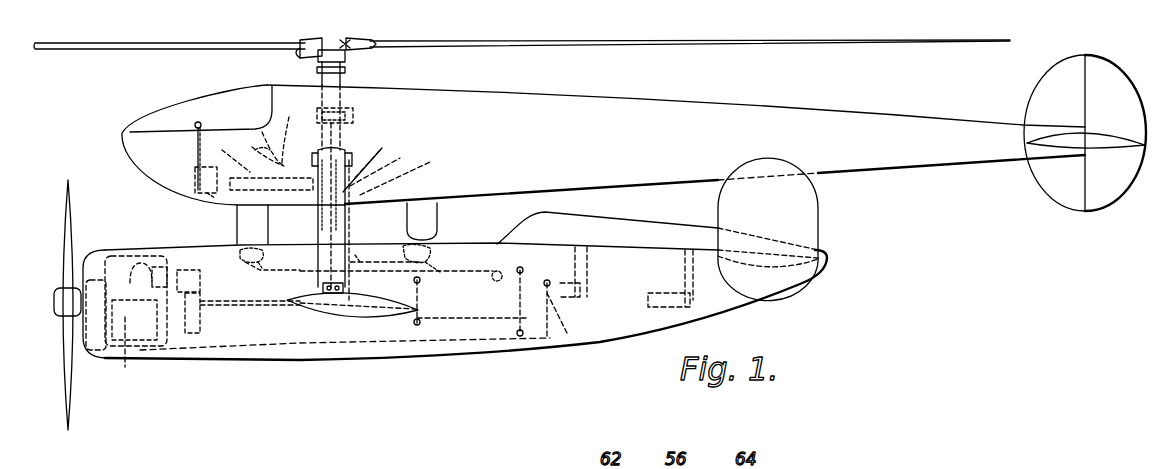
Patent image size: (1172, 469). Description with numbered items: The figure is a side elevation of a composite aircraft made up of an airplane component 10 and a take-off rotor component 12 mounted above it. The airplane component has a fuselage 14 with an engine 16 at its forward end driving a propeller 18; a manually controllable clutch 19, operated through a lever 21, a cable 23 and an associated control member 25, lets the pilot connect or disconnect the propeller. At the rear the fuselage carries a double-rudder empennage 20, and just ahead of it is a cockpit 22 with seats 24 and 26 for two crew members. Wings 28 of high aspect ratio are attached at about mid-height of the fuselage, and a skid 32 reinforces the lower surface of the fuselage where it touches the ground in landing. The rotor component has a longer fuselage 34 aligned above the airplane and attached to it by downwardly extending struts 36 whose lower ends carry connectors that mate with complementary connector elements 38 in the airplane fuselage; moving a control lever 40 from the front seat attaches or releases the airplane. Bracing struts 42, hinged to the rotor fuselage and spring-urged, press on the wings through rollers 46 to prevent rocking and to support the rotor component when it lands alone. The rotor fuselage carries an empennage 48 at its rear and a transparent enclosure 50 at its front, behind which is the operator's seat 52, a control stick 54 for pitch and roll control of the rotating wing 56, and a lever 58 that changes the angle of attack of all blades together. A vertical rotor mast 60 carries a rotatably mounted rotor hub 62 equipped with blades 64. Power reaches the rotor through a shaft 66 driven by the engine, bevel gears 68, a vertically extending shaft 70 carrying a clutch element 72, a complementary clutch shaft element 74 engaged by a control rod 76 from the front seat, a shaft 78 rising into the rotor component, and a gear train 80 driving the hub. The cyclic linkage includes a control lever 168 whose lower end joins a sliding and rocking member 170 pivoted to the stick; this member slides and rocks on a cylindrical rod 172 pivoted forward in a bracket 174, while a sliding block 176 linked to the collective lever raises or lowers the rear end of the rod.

The airplane component 10 is at (372, 371).
The take-off rotor component 12 is at (722, 88).
The fuselage 14 is at (463, 353).
The engine 16 is at (129, 368).
The propeller 18 is at (60, 347).
The clutch 19 is at (53, 297).
The empennage 20 is at (813, 236).
The lever 21 is at (90, 360).
The cockpit 22 is at (652, 232).
The cable 23 is at (485, 342).
The front seat 24 is at (580, 289).
The control rod 25 is at (567, 333).
The seat 26 is at (657, 297).
The wings 28 is at (373, 307).
The skid 32 is at (267, 363).
The fuselage 34 is at (567, 93).
The struts 36 is at (438, 205).
The connector elements 38 is at (268, 257).
The control lever 40 is at (527, 281).
The bracing struts 42 is at (352, 178).
The rollers 46 is at (330, 293).
The empennage 48 is at (1132, 100).
The transparent enclosure 50 is at (203, 102).
The operator's seat 52 is at (264, 133).
The control stick 54 is at (197, 152).
The rotating wing 56 is at (405, 45).
The lever 58 is at (242, 165).
The rotor mast 60 is at (345, 70).
The rotor hub 62 is at (335, 36).
The blades 64 is at (528, 44).
The shaft 66 is at (250, 307).
The bevel gears 68 is at (310, 360).
The vertically extending shaft 70 is at (367, 244).
The clutch element 72 is at (353, 230).
The clutch shaft element 74 is at (350, 192).
The control rod 76 is at (473, 268).
The shaft 78 is at (422, 162).
The gear train 80 is at (354, 118).
The control lever 168 is at (365, 157).
The sliding and rocking member 170 is at (200, 172).
The cylindrical rod 172 is at (207, 208).
The bracket 174 is at (207, 193).
The sliding block 176 is at (278, 255).